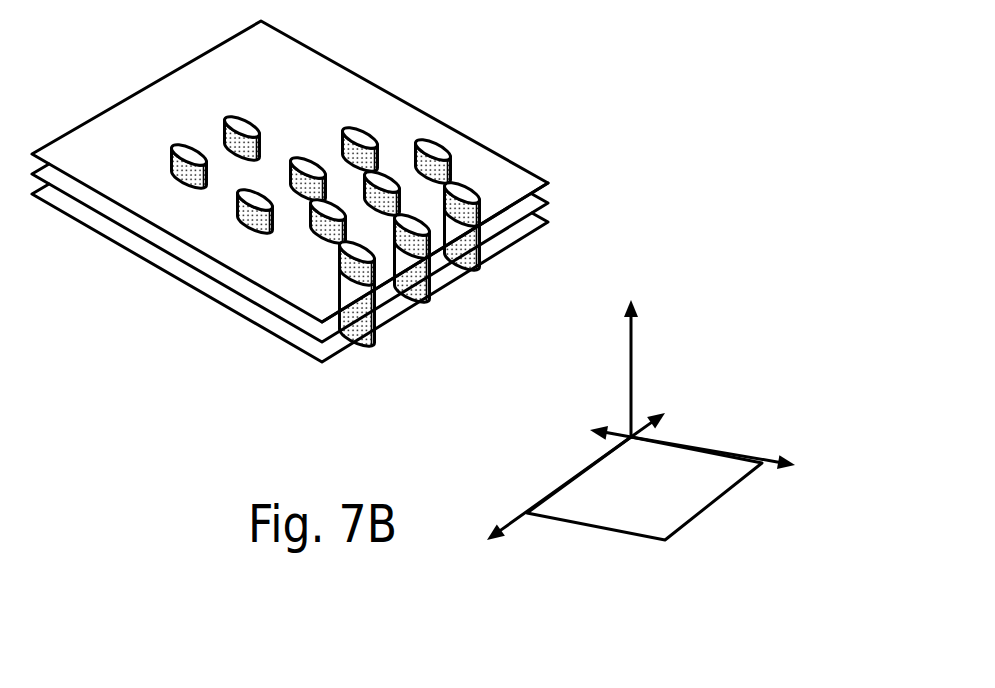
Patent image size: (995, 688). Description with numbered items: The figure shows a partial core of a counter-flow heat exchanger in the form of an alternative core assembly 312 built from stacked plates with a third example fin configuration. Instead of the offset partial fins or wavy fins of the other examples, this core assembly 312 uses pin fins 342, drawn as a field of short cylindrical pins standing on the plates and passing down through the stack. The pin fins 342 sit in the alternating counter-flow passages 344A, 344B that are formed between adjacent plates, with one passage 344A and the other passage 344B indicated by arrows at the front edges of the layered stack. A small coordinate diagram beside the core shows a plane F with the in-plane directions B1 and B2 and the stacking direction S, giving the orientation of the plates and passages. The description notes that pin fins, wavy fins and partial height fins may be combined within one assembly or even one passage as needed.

The core assembly 312 is at (328, 236).
The pin fins 342 is at (262, 192).
The counter-flow passage 344A is at (358, 348).
The counter-flow passage 344B is at (339, 330).
The S axis S is at (632, 360).
The B1 axis B1 is at (698, 448).
The B2 axis B2 is at (580, 472).
The F plane F is at (663, 495).